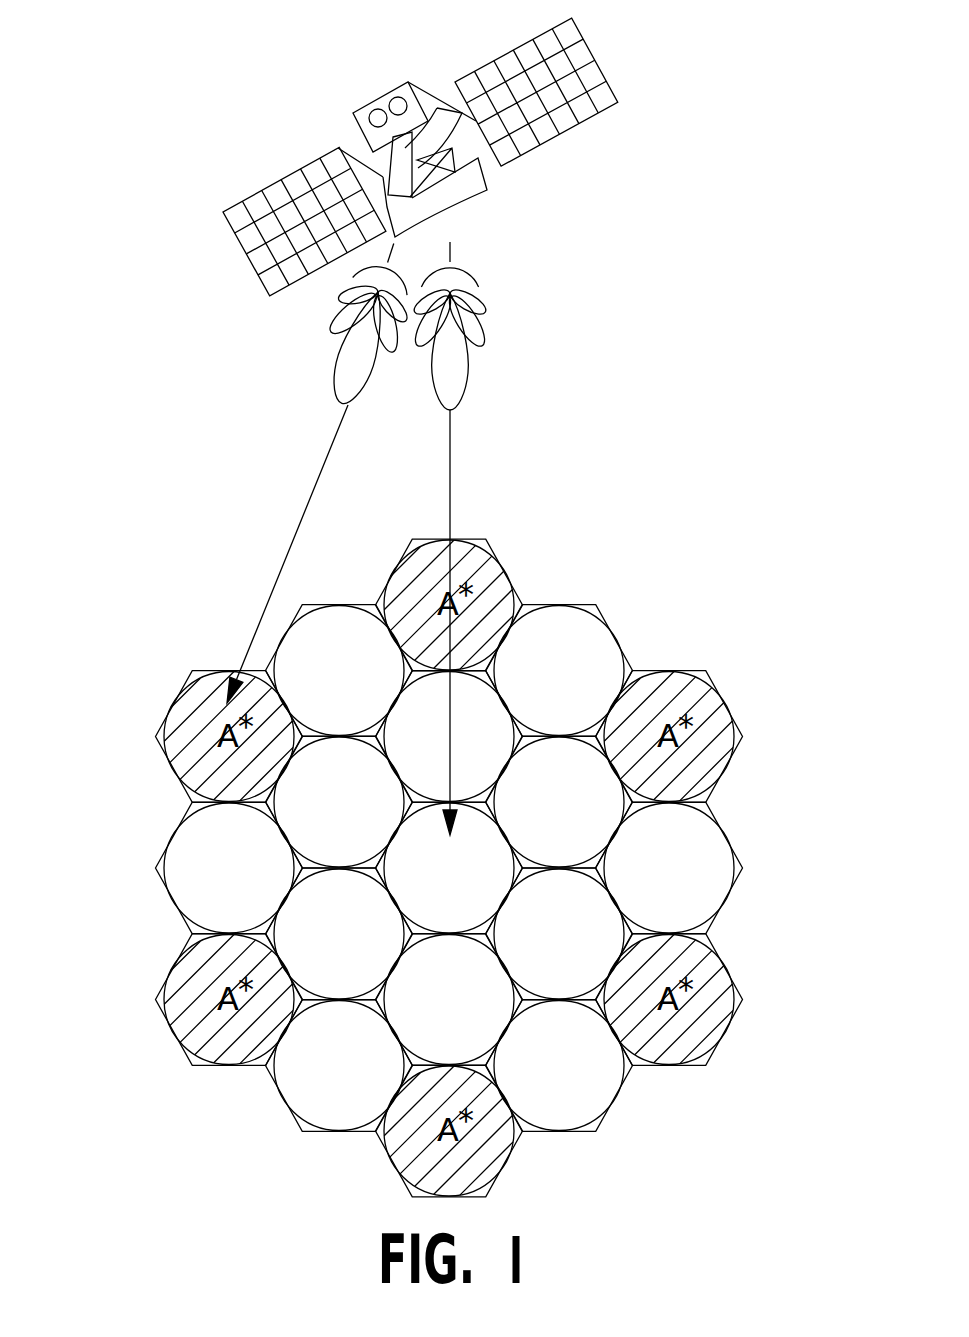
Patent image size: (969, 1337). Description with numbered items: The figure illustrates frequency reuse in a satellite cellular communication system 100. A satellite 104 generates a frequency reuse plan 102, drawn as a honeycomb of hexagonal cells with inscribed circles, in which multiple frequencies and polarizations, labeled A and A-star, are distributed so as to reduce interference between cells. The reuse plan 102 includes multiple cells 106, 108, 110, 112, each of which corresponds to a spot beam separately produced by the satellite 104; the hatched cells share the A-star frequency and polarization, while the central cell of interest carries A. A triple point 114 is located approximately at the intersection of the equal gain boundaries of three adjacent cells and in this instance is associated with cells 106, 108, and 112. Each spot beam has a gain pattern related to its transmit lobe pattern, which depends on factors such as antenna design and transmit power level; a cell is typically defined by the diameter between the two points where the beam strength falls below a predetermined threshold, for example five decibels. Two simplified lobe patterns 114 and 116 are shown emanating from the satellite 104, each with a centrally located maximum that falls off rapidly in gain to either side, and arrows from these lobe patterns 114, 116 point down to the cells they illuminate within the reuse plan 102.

The satellite cellular communication system 100 is at (726, 259).
The frequency reuse plan 102 is at (468, 868).
The satellite 104 is at (548, 126).
The cell 106 is at (175, 842).
The cell 108 is at (400, 928).
The cell 110 is at (490, 905).
The cell 112 is at (173, 973).
The triple point / lobe pattern 114 is at (340, 360).
The lobe pattern 116 is at (468, 370).